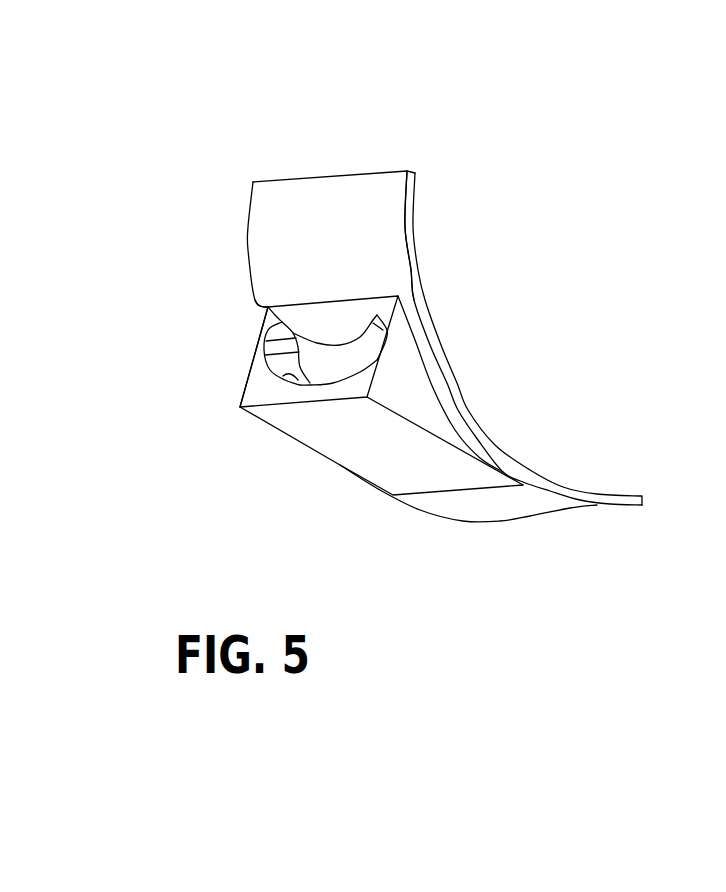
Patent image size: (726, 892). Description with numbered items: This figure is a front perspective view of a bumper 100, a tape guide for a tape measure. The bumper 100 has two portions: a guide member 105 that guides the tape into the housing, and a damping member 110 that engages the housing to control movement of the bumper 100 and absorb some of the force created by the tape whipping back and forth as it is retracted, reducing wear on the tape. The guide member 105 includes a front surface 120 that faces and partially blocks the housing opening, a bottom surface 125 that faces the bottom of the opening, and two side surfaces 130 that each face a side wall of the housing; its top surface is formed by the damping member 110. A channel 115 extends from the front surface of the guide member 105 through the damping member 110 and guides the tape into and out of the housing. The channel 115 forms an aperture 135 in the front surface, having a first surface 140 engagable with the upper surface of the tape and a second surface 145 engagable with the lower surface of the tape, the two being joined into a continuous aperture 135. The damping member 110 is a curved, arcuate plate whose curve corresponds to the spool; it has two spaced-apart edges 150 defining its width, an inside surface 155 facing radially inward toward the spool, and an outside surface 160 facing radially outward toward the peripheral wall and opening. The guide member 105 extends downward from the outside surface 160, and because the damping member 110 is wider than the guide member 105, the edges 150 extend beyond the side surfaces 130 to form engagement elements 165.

The bumper 100 is at (213, 147).
The guide member 105 is at (378, 395).
The damping member 110 is at (342, 203).
The channel 115 is at (312, 363).
The front surface 120 is at (250, 390).
The bottom surface 125 is at (330, 438).
The side surfaces 130 is at (405, 385).
The aperture 135 is at (272, 312).
The first surface 140 is at (347, 345).
The second surface 145 is at (275, 378).
The edges 150 is at (250, 225).
The inside surface 155 is at (598, 488).
The outside surface 160 is at (553, 512).
The engagement elements 165 is at (457, 407).